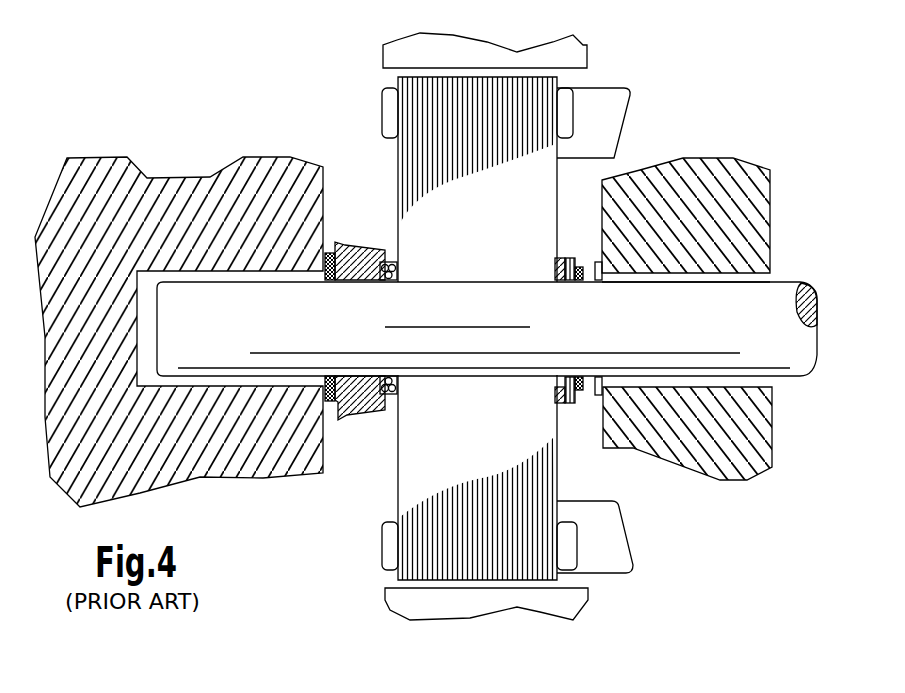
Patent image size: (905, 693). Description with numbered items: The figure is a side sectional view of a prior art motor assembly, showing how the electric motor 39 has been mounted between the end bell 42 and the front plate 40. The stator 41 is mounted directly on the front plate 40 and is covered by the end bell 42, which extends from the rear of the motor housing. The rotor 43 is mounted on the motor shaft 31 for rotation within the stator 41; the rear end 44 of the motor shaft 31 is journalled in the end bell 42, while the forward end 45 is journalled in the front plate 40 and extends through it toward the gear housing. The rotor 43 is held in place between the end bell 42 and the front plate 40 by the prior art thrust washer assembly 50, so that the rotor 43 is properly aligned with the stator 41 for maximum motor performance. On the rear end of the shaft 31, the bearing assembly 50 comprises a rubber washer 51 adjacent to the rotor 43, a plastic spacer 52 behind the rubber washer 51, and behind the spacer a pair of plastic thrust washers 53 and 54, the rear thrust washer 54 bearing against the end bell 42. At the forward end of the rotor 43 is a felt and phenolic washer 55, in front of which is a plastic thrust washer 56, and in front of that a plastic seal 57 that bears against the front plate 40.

The motor shaft 31 is at (776, 354).
The electric motor 39 is at (659, 597).
The front plate 40 is at (755, 462).
The stator 41 is at (568, 58).
The end bell 42 is at (163, 470).
The rotor 43 is at (408, 478).
The rear end of the motor shaft 44 is at (223, 307).
The forward end of the motor shaft 45 is at (753, 303).
The thrust washer assembly 50 is at (683, 118).
The rubber washer 51 is at (386, 251).
The plastic spacer 52 is at (353, 243).
The plastic thrust washer 53 is at (327, 256).
The rear thrust washer 54 is at (323, 260).
The felt and phenolic washer 55 is at (560, 256).
The plastic thrust washer 56 is at (565, 405).
The plastic seal 57 is at (593, 400).